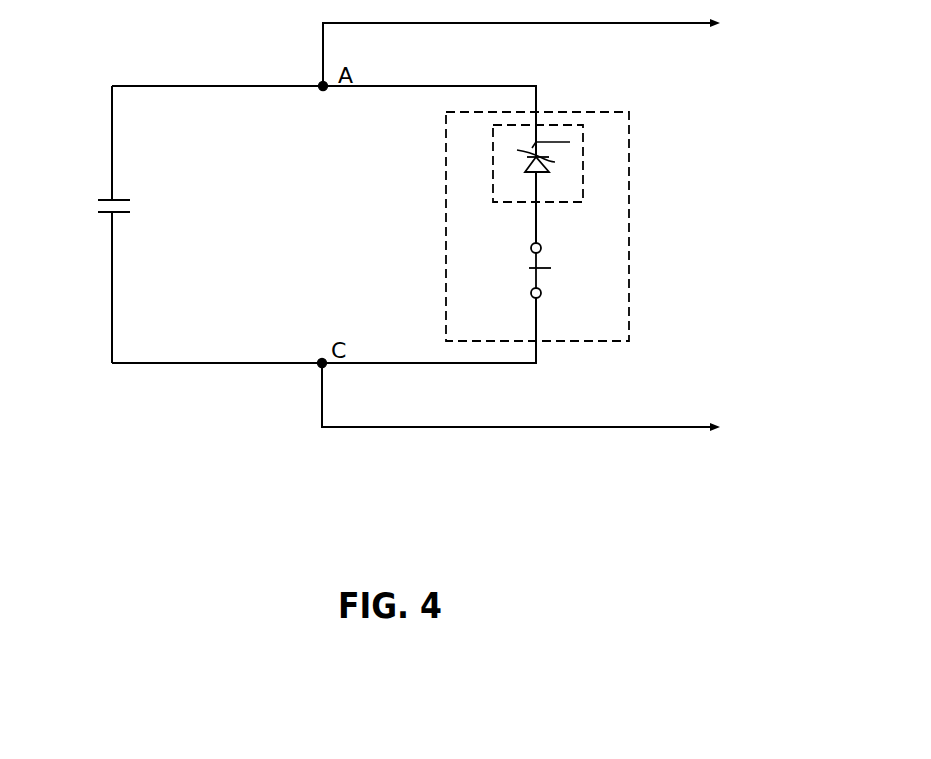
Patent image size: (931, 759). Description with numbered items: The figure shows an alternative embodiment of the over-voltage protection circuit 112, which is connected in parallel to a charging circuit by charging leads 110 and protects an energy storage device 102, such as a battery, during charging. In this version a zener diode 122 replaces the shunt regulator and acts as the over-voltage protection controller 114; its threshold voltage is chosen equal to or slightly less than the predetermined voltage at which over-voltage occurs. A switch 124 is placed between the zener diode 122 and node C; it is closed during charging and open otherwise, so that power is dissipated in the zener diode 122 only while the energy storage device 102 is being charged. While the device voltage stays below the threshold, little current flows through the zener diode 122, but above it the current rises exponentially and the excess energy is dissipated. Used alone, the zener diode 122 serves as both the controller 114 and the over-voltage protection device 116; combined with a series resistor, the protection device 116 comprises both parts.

The energy storage device 102 is at (80, 201).
The charging leads 110 is at (749, 228).
The over-voltage protection circuit 112 is at (634, 153).
The over-voltage protection controller 114 is at (490, 134).
The over-voltage protection device 116 is at (490, 189).
The zener diode 122 is at (556, 142).
The switch 124 is at (548, 268).